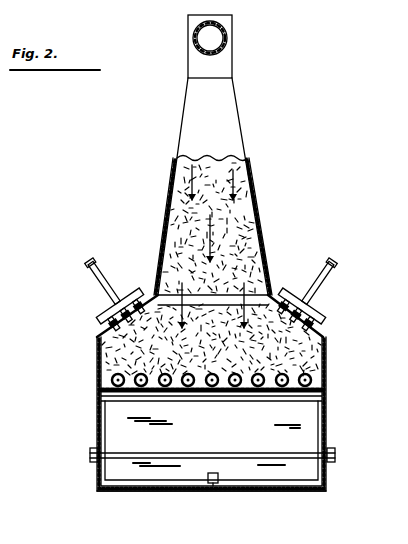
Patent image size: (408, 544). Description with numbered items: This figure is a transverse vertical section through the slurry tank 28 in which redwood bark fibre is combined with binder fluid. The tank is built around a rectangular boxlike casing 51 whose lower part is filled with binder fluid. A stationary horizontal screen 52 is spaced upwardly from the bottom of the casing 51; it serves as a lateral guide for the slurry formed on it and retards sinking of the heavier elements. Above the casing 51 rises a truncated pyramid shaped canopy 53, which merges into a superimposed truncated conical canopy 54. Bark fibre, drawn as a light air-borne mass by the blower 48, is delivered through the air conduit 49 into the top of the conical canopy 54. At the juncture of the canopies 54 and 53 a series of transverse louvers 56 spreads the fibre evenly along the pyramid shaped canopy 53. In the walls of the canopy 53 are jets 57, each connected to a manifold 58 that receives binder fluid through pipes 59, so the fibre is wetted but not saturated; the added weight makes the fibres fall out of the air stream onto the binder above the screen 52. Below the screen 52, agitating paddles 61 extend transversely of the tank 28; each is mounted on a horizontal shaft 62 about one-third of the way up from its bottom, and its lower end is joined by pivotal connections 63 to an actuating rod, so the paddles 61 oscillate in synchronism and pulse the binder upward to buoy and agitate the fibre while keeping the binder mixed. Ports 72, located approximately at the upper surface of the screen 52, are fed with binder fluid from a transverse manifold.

The slurry tank 28 is at (330, 371).
The blower 48 is at (226, 25).
The air conduit 49 is at (222, 65).
The casing 51 is at (307, 492).
The screen 52 is at (190, 398).
The pyramid shaped canopy 53 is at (325, 310).
The conical canopy 54 is at (250, 182).
The louvers 56 is at (268, 290).
The jets 57 is at (124, 326).
The manifold 58 is at (117, 328).
The pipes 59 is at (97, 276).
The agitating paddles 61 is at (305, 422).
The shaft 62 is at (337, 455).
The pivotal connections 63 is at (215, 492).
The ports 72 is at (234, 374).